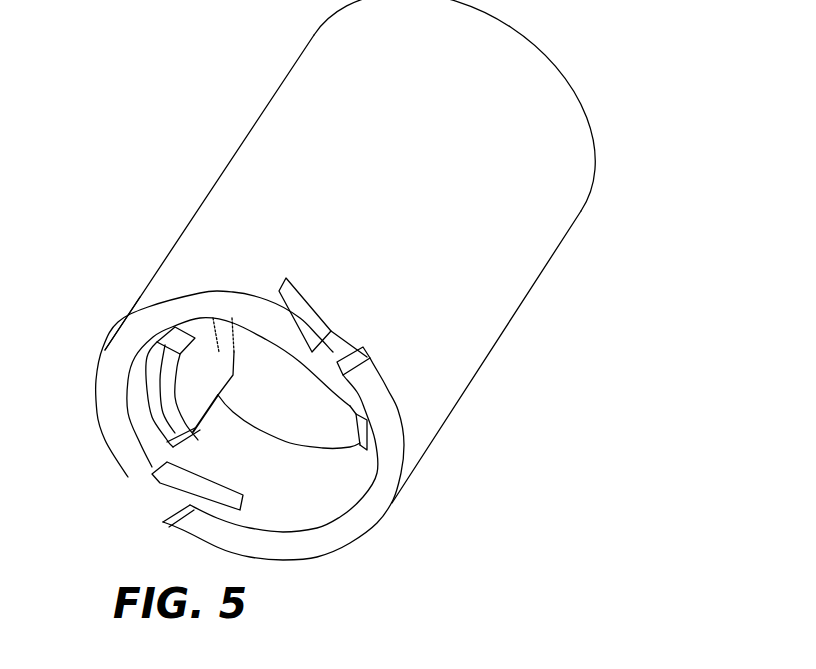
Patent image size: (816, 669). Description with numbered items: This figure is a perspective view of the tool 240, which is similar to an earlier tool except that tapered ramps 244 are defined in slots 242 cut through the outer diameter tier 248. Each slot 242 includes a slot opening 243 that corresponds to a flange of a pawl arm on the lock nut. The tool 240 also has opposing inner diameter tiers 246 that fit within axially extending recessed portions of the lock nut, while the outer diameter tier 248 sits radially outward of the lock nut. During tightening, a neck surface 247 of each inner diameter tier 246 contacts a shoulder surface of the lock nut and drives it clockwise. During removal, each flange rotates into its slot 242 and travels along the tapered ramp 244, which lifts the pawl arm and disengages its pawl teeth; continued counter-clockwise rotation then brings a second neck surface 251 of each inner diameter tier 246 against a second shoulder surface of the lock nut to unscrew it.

The tool 240 is at (663, 270).
The slot 242 is at (147, 503).
The slot opening 243 is at (175, 521).
The tapered ramp 244 is at (220, 488).
The inner diameter tier 246 is at (200, 372).
The neck surface 247 is at (222, 409).
The outer diameter tier 248 is at (152, 466).
The second neck surface 251 is at (177, 290).